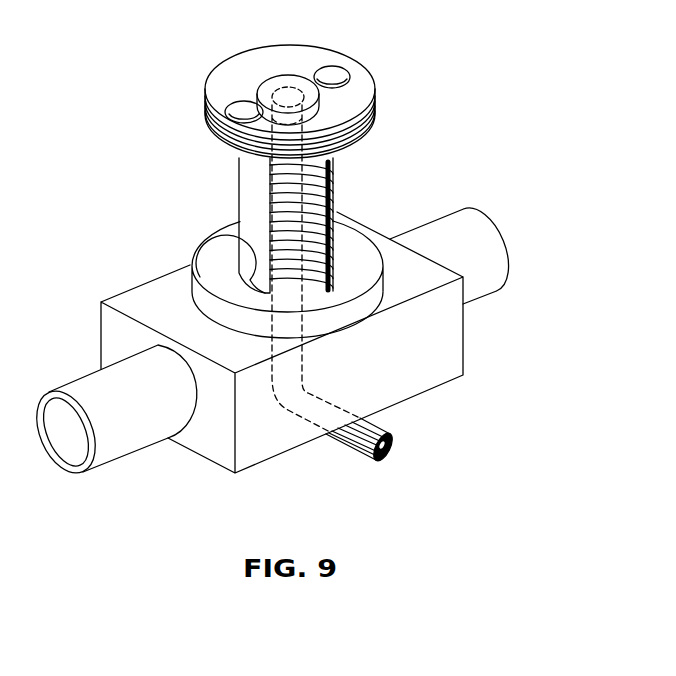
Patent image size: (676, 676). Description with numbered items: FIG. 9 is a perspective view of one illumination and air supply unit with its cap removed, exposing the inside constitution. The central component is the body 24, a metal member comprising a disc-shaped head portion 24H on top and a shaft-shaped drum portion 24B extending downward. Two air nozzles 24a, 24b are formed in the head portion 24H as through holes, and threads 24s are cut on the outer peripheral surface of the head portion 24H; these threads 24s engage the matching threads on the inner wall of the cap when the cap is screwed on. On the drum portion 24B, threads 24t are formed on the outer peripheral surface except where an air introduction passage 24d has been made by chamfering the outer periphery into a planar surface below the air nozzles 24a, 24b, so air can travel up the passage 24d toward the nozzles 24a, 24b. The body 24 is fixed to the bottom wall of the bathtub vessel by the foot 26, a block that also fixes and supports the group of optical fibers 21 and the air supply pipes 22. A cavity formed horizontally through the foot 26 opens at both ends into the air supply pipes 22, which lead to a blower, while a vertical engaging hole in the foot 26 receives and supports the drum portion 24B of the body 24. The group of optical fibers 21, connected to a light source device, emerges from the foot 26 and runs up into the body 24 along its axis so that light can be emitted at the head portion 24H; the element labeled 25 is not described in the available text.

The group of optical fibers 21 is at (355, 438).
The air supply pipes 22 is at (113, 437).
The body 24 is at (390, 81).
The head portion 24H is at (205, 89).
The air nozzle 24a is at (238, 108).
The air nozzle 24b is at (333, 70).
The threads 24s is at (373, 130).
The threads 24t is at (337, 180).
The drum portion 24B is at (240, 190).
The air introduction passage 24d is at (238, 239).
The boss 25 is at (267, 88).
The foot portion 26 is at (405, 362).